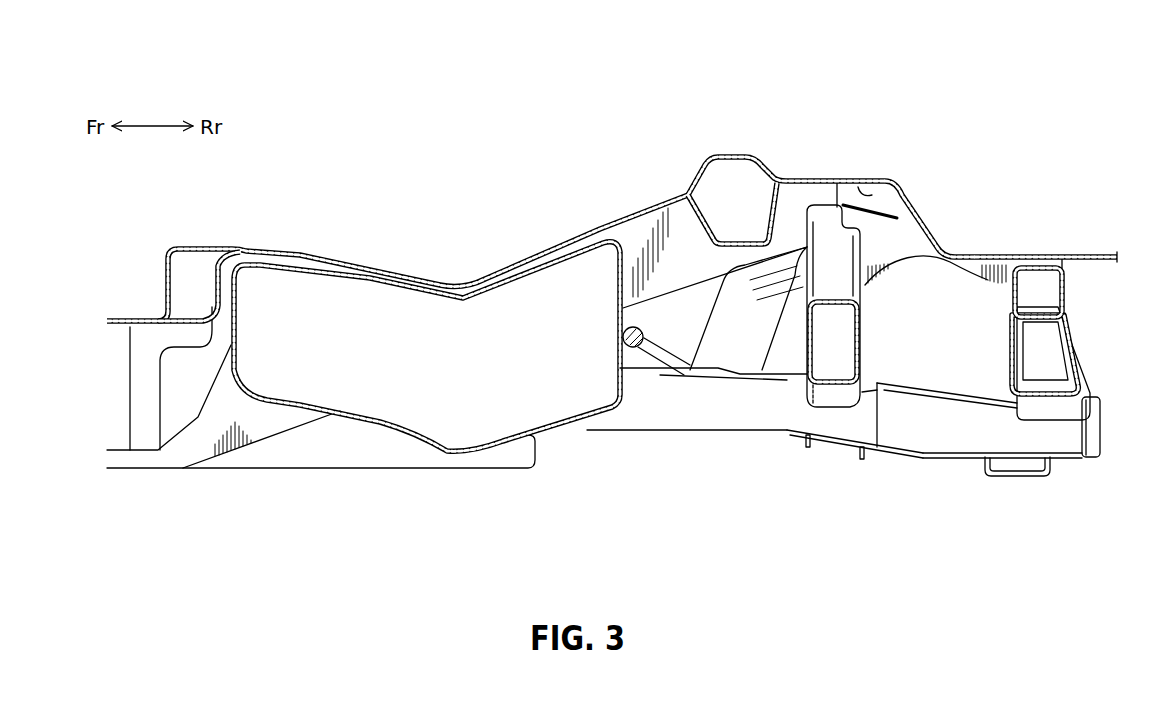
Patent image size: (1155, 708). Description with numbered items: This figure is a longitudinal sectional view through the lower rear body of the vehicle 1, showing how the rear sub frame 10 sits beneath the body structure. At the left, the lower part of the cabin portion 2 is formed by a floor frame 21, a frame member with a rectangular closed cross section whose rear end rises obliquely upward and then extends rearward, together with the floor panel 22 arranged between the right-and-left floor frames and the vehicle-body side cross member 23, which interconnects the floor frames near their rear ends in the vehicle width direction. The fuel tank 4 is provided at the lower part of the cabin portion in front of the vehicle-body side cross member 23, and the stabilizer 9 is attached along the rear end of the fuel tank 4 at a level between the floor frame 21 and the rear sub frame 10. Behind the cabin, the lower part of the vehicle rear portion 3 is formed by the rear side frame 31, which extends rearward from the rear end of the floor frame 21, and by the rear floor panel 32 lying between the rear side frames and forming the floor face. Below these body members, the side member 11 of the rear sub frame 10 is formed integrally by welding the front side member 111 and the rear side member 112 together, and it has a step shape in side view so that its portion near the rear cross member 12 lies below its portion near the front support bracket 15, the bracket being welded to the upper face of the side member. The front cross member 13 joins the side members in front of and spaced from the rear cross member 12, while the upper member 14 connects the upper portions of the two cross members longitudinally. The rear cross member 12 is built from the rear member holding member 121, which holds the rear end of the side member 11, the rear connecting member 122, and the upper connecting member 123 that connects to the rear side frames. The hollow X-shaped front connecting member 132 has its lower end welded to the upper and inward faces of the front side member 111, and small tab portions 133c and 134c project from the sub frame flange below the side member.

The vehicle 1 is at (346, 75).
The cabin portion 2 is at (496, 202).
The vehicle rear portion 3 is at (995, 180).
The fuel tank 4 is at (379, 422).
The stabilizer 9 is at (649, 355).
The rear sub frame 10 is at (1002, 405).
The side member 11 is at (927, 459).
The rear cross member 12 is at (1042, 363).
The front cross member 13 is at (868, 306).
The upper member 14 is at (976, 276).
The front support bracket 15 is at (709, 315).
The floor frame 21 is at (263, 440).
The floor panel 22 is at (320, 250).
The vehicle-body side cross member 23 is at (766, 211).
The rear side frame 31 is at (887, 178).
The rear floor horizontal portion 32 is at (1113, 258).
The front side member 111 is at (690, 420).
The rear side member 112 is at (960, 437).
The rear member holding member 121 is at (1020, 477).
The rear connecting member 122 is at (1013, 358).
The upper connecting member 123 is at (1064, 283).
The front connecting member 132 is at (856, 286).
The tab portion 133c is at (863, 462).
The tab portion 134c is at (809, 450).